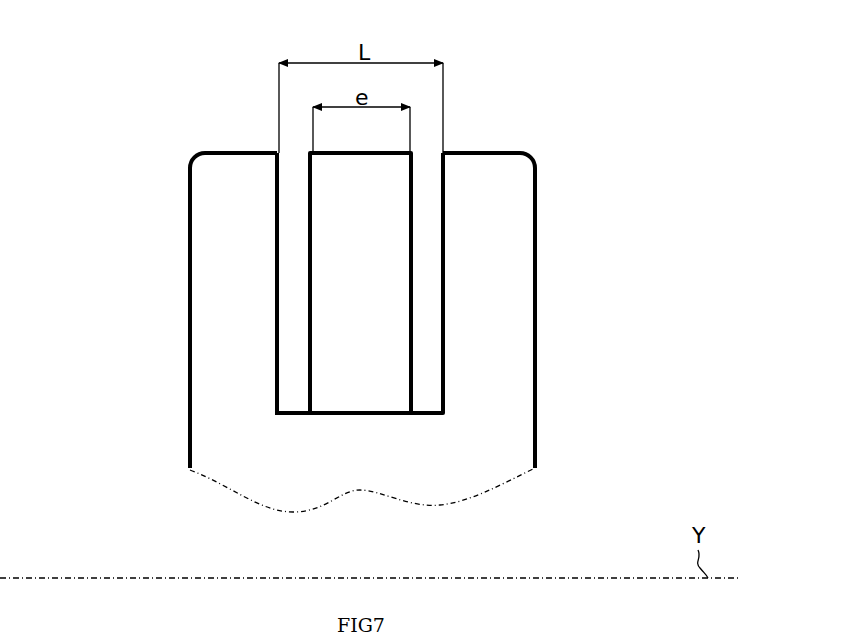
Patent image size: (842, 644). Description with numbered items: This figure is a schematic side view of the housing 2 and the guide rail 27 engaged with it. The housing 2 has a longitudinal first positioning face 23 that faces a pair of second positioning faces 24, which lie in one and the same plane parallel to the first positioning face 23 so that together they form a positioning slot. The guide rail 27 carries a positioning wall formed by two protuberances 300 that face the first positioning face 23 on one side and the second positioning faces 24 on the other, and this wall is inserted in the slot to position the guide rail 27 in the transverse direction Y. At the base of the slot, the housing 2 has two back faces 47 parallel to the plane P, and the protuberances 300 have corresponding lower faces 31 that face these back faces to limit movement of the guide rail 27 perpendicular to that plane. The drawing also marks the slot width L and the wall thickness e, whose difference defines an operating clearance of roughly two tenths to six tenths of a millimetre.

The housing 2 is at (502, 413).
The first positioning face 23 is at (278, 362).
The second positioning face 24 is at (443, 285).
The guide rail 27 is at (362, 388).
The lower face 31 is at (357, 417).
The back face 47 is at (292, 417).
The protuberance 300 is at (375, 249).